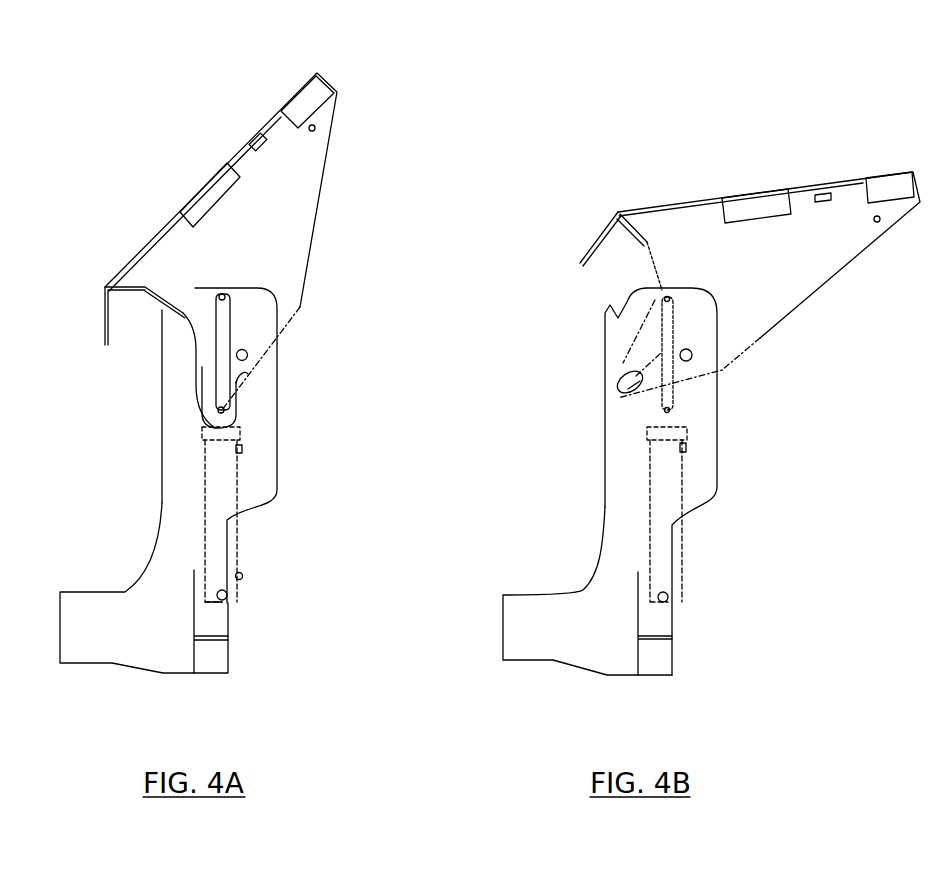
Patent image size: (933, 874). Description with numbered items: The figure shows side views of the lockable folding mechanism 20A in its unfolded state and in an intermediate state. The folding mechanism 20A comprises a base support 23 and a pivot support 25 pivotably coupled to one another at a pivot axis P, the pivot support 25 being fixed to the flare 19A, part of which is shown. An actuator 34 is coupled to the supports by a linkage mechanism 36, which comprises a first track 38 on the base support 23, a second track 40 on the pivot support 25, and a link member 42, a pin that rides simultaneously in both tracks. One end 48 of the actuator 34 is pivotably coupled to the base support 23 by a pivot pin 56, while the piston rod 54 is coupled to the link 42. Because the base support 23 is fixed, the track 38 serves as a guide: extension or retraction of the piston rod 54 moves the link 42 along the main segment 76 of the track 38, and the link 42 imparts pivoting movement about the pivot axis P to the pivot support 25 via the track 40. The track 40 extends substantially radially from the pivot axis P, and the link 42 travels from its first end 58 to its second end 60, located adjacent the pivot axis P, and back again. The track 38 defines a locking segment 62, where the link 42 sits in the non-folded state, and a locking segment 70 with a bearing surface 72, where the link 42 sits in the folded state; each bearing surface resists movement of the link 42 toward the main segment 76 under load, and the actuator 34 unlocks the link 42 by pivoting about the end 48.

In FIG. 4A, the flare 19A is at (275, 110).
In FIG. 4A, the folding mechanism 20A is at (398, 205).
In FIG. 4A, the base support 23 is at (165, 490).
In FIG. 4B, the base support 23 is at (617, 480).
In FIG. 4A, the pivot support 25 is at (304, 240).
In FIG. 4B, the pivot support 25 is at (812, 287).
In FIG. 4A, the actuator 34 is at (232, 490).
In FIG. 4B, the linkage mechanism 36 is at (654, 359).
In FIG. 4A, the first track 38 is at (230, 368).
In FIG. 4B, the first track 38 is at (673, 330).
In FIG. 4A, the second track 40 is at (238, 385).
In FIG. 4B, the second track 40 is at (640, 373).
In FIG. 4A, the link member 42 is at (236, 415).
In FIG. 4A, the end of the actuator 48 is at (228, 597).
In FIG. 4B, the end of the actuator 48 is at (668, 597).
In FIG. 4B, the piston rod 54 is at (673, 418).
In FIG. 4A, the pivot pin 56 is at (222, 605).
In FIG. 4B, the first end of track 40 58 is at (630, 387).
In FIG. 4A, the second end of track 40 60 is at (217, 410).
In FIG. 4B, the locking segment 62 is at (668, 410).
In FIG. 4A, the locking segment 70 is at (228, 298).
In FIG. 4B, the locking segment 70 is at (672, 305).
In FIG. 4A, the bearing surface 72 is at (215, 300).
In FIG. 4A, the main segment 76 is at (224, 323).
In FIG. 4A, the pivot axis P is at (250, 355).
In FIG. 4B, the pivot axis P is at (694, 356).